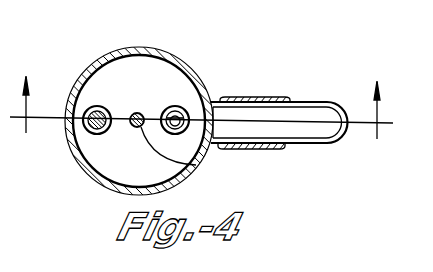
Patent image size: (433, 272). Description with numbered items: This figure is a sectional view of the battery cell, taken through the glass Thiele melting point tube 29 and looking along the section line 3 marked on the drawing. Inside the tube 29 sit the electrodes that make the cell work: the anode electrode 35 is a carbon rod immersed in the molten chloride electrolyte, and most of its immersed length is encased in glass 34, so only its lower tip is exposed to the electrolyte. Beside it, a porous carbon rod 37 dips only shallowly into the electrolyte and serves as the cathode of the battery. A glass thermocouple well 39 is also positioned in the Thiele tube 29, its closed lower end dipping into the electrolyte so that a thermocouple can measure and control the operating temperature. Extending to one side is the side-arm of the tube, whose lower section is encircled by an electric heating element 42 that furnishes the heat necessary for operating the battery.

The section line 3- 3 is at (201, 98).
The glass Thiele melting point tube 29 is at (146, 47).
The glass encasement 34 is at (87, 111).
The anode electrode 35 is at (89, 131).
The porous carbon rod 37 is at (196, 165).
The glass thermocouple well 39 is at (185, 110).
The electric heating element 42 is at (273, 98).